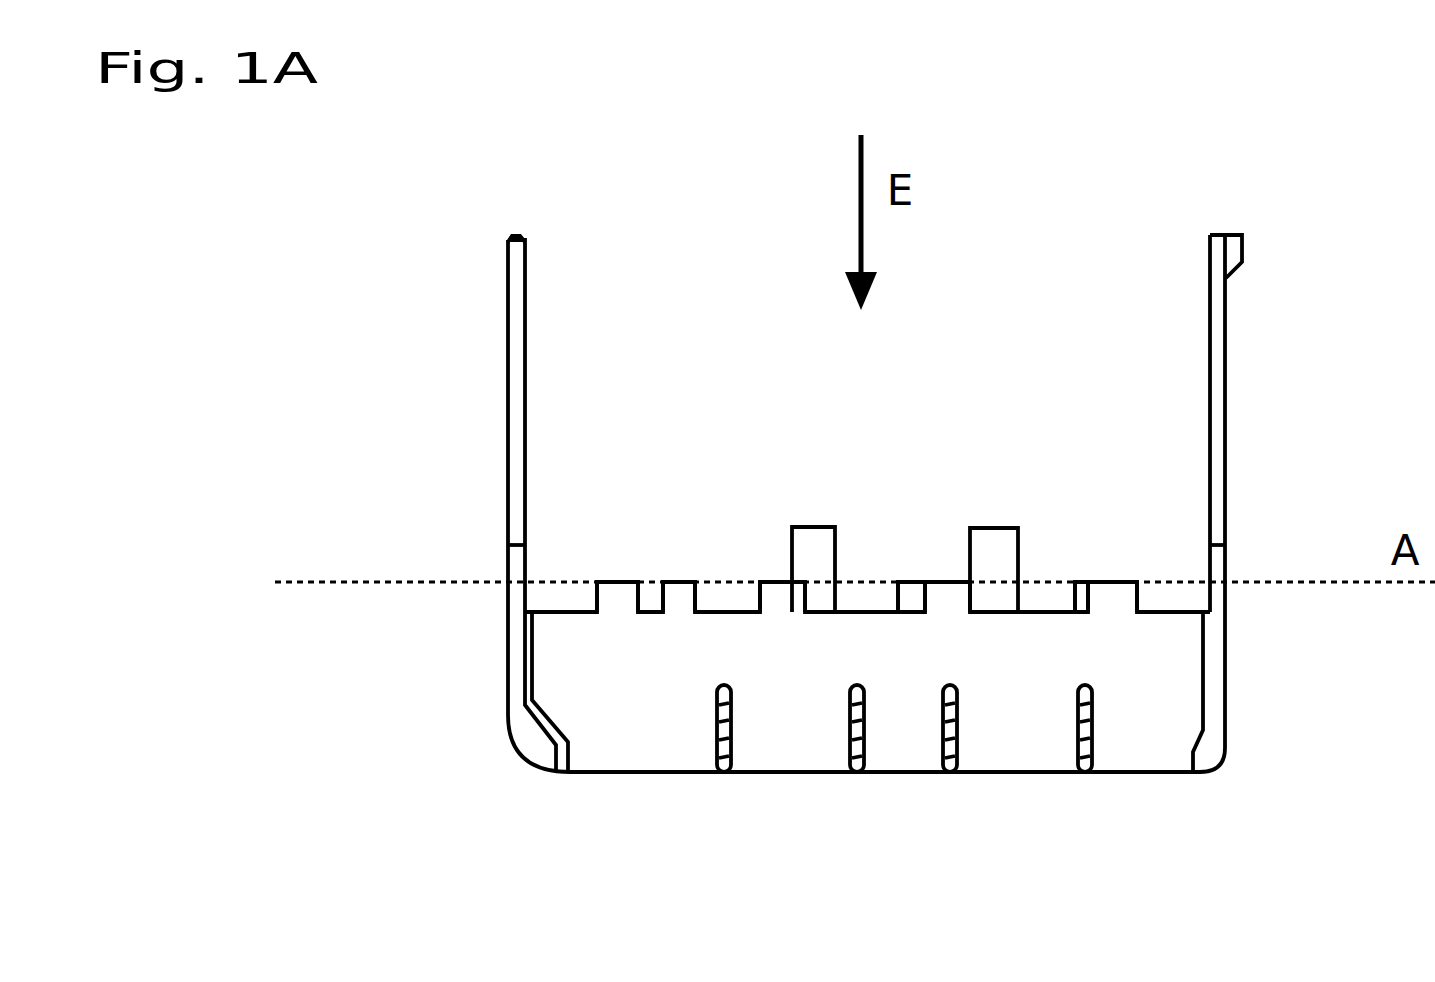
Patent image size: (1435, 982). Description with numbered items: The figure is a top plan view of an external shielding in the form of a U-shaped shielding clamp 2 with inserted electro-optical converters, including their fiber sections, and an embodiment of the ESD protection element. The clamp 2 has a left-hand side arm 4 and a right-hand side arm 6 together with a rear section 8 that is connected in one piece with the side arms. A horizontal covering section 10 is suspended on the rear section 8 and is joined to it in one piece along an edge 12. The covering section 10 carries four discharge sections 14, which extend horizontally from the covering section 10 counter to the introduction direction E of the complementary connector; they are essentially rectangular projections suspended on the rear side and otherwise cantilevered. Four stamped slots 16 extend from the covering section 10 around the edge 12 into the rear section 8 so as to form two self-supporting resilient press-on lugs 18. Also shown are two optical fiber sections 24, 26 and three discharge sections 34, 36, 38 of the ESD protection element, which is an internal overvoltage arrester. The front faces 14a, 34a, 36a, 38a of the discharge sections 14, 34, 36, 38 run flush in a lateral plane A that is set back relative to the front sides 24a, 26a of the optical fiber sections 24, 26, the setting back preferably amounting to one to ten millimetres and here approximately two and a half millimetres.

The U-shaped shielding clamp 2 is at (1225, 365).
The left-hand side arm 4 is at (508, 420).
The right-hand side arm 6 is at (1225, 440).
The rear section 8 is at (1140, 772).
The covering section 10 is at (1155, 698).
The edge 12 is at (617, 772).
The discharge section 14 is at (617, 600).
The front face of discharge section 14a is at (617, 560).
The stamped slot 16 is at (731, 772).
The press-on lug 18 is at (795, 723).
The optical fiber section 24 is at (818, 545).
The front side of optical fiber section 24a is at (810, 505).
The optical fiber section 26 is at (995, 545).
The front side of optical fiber section 26a is at (993, 506).
The discharge section of ESD protection element 34 is at (680, 600).
The front face of discharge section 34a is at (680, 560).
The discharge section of ESD protection element 36 is at (1077, 613).
The front face of discharge section 36a is at (1075, 560).
The discharge section of ESD protection element 38 is at (905, 613).
The front face of discharge section 38a is at (908, 560).